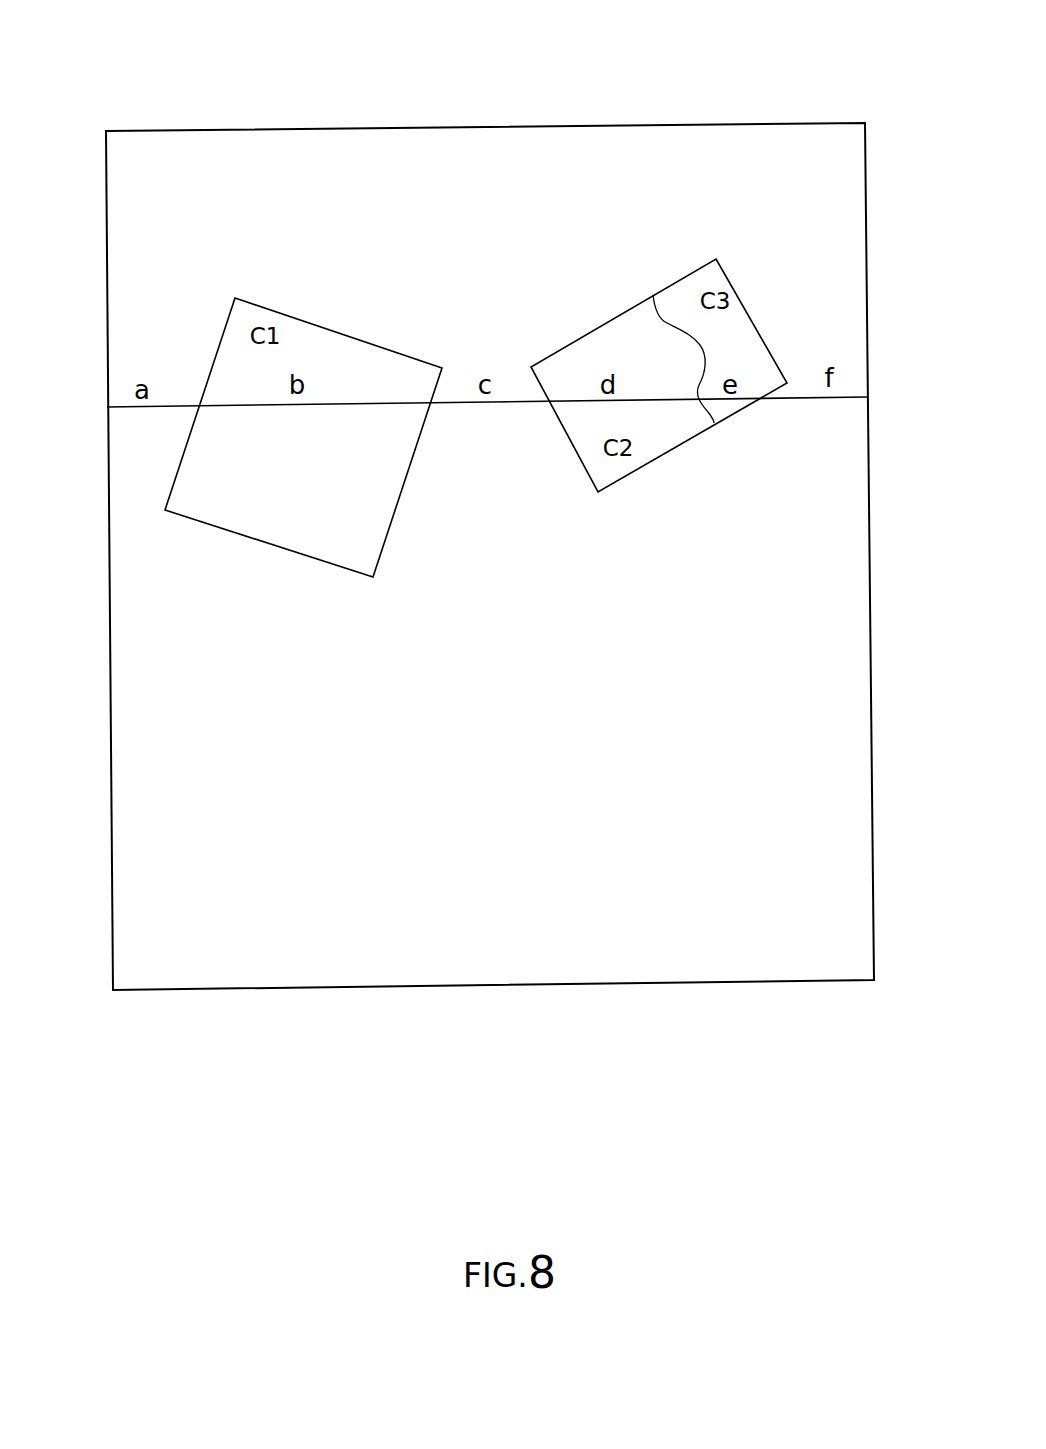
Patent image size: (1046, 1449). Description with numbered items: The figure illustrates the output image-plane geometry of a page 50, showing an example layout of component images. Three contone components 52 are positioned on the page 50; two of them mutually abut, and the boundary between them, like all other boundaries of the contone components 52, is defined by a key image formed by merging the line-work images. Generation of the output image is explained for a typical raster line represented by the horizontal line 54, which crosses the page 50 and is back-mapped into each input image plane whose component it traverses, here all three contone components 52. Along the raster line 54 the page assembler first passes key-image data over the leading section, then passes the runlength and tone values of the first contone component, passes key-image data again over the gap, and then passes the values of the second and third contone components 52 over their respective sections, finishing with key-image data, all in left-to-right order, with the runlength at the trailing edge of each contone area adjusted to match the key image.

The page 50 is at (212, 128).
The contone components 52 is at (730, 348).
The horizontal line 54 is at (165, 408).